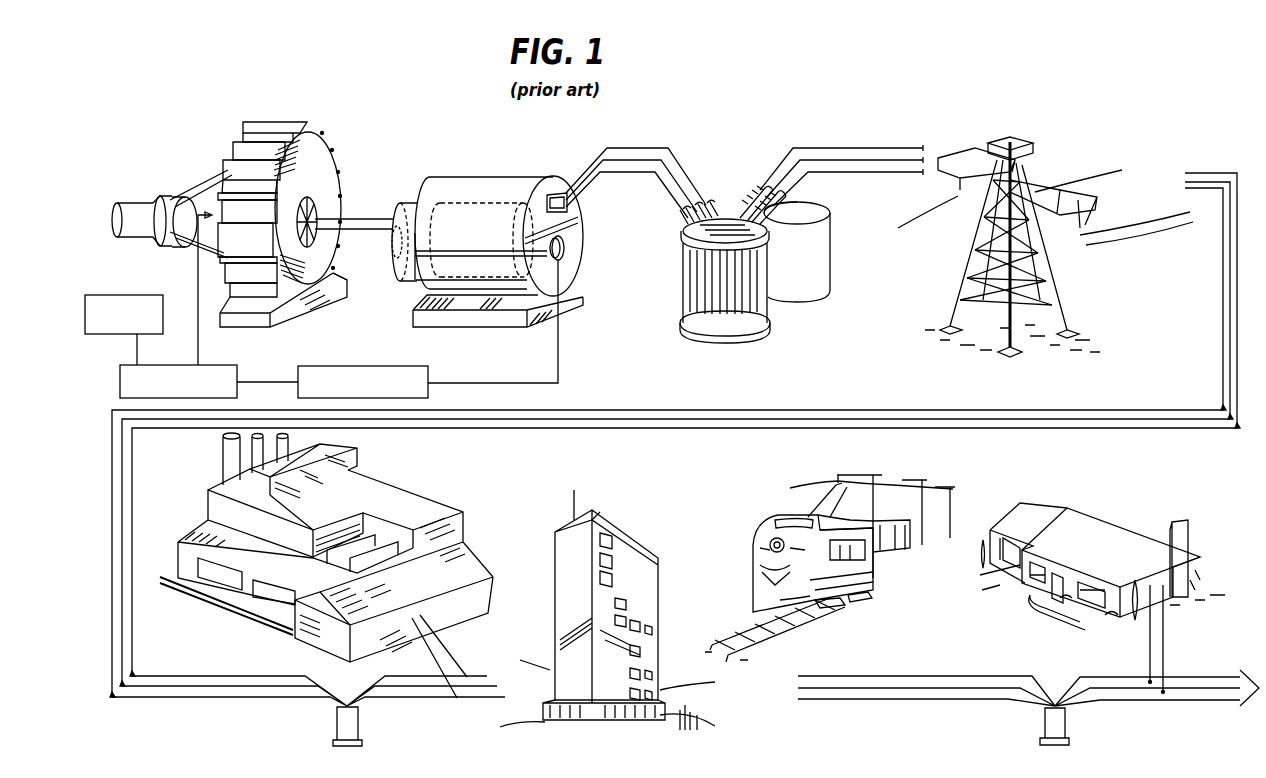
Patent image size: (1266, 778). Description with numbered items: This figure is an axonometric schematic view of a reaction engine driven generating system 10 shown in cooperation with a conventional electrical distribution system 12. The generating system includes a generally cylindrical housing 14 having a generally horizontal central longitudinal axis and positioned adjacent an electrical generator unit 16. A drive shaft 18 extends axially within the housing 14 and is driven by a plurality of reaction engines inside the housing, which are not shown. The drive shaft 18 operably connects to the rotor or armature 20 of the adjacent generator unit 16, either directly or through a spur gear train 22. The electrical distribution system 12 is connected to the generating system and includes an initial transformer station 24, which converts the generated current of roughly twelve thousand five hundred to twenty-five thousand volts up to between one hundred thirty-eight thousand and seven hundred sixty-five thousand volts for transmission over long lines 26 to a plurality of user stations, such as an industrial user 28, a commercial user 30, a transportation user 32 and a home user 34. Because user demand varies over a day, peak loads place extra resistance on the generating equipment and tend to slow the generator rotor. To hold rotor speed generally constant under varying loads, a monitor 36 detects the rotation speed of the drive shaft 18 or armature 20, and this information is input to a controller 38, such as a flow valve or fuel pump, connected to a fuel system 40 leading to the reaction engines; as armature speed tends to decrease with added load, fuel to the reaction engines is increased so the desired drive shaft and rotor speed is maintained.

The reaction engine driven generating system 10 is at (378, 162).
The electrical distribution system 12 is at (913, 130).
The cylindrical housing 14 is at (322, 128).
The electrical generator unit 16 is at (455, 176).
The drive shaft 18 is at (356, 218).
The rotor or armature 20 is at (548, 275).
The spur gear train 22 is at (404, 202).
The initial transformer station 24 is at (722, 191).
The long lines 26 is at (1089, 252).
The industrial user 28 is at (438, 497).
The commercial user 30 is at (634, 533).
The transportation user 32 is at (889, 570).
The home user 34 is at (1118, 525).
The monitor 36 is at (430, 378).
The controller 38 is at (238, 378).
The fuel system 40 is at (86, 312).